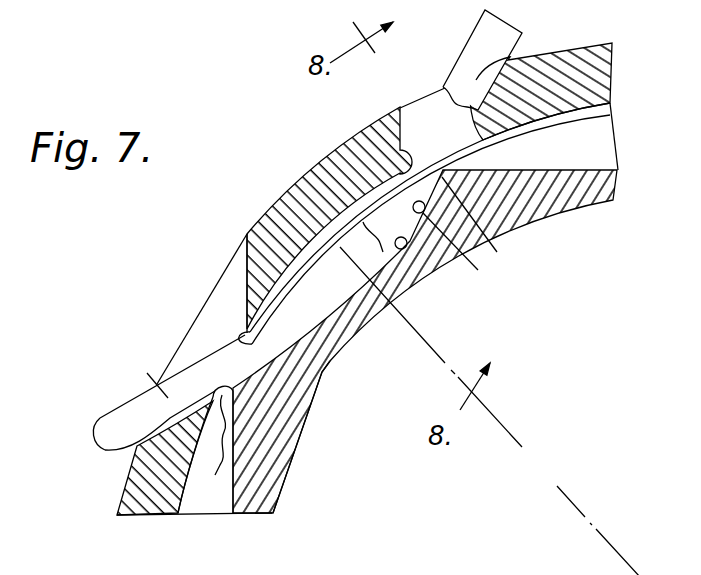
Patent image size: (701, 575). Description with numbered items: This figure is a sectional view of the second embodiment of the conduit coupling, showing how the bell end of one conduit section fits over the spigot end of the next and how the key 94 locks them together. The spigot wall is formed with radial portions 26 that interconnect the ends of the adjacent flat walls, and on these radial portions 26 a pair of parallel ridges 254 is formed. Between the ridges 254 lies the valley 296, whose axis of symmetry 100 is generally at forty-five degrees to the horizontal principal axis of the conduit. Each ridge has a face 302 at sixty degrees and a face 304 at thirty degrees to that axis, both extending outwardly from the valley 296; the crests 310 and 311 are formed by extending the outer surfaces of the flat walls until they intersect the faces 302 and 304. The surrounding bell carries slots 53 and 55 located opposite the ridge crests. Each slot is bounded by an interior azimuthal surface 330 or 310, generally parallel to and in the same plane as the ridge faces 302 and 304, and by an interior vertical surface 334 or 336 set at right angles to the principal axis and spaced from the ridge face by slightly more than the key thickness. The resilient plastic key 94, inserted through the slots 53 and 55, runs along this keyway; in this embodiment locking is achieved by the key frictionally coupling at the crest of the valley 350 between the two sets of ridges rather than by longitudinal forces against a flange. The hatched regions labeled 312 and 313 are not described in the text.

The radial portions 26 is at (400, 290).
The slot 53 is at (425, 108).
The slot 55 is at (219, 280).
The key 94 is at (157, 385).
The axis of symmetry 100 is at (566, 479).
The ridges 254 is at (240, 396).
The valley 296 is at (406, 252).
The face 302 is at (480, 256).
The face 304 is at (322, 375).
The crest 310 is at (470, 155).
The crest 311 is at (194, 450).
The arcuate hatched band 312 is at (398, 160).
The thin liner band 313 is at (238, 340).
The interior azimuthal surface 330 is at (512, 60).
The interior vertical surface 334 is at (415, 108).
The interior vertical surface 336 is at (247, 262).
The crest of the valley 350 is at (367, 297).